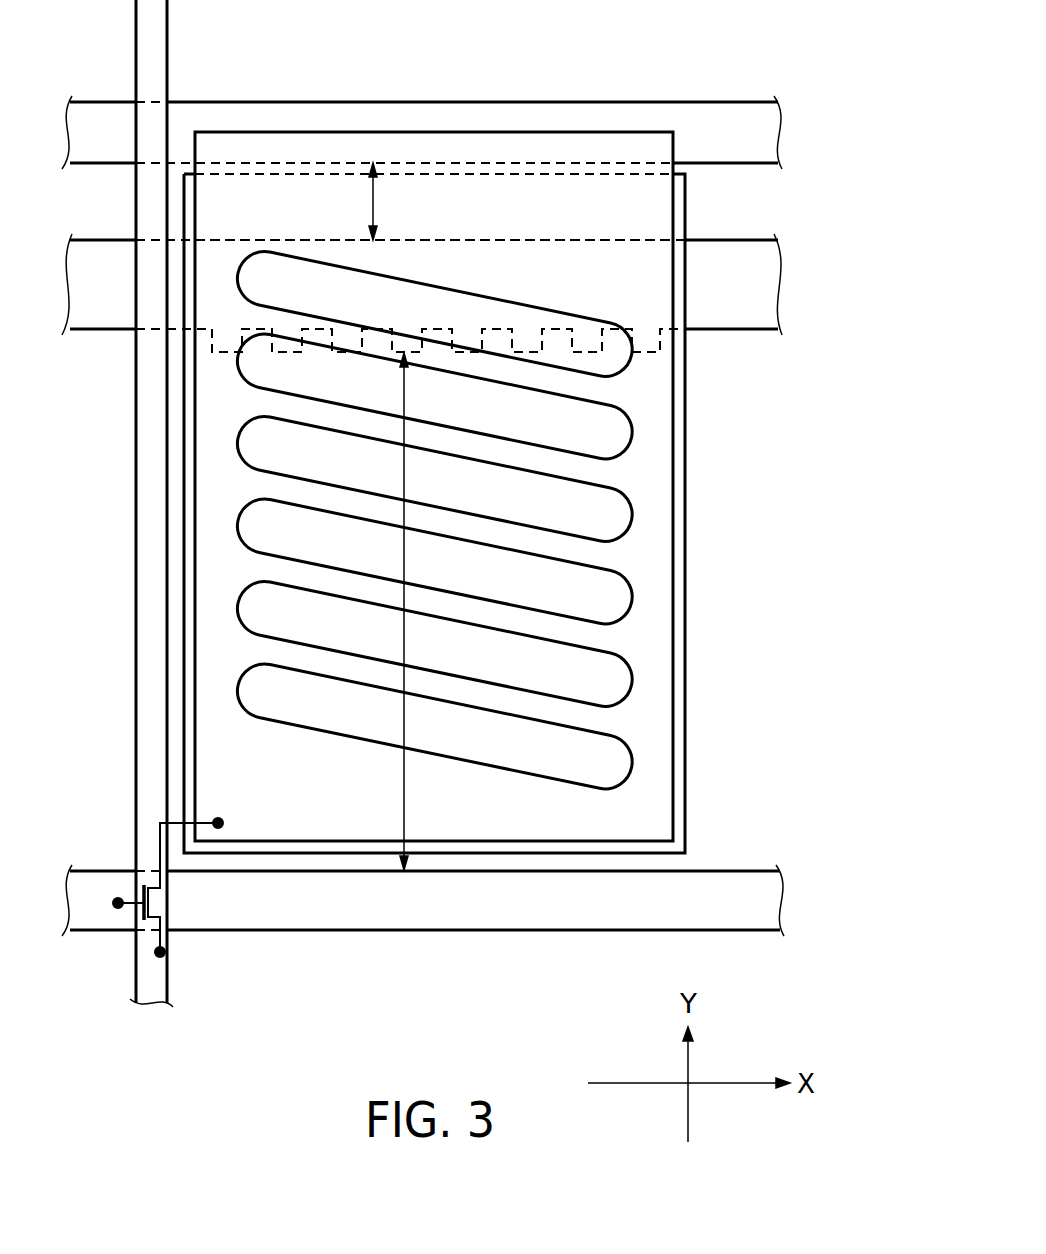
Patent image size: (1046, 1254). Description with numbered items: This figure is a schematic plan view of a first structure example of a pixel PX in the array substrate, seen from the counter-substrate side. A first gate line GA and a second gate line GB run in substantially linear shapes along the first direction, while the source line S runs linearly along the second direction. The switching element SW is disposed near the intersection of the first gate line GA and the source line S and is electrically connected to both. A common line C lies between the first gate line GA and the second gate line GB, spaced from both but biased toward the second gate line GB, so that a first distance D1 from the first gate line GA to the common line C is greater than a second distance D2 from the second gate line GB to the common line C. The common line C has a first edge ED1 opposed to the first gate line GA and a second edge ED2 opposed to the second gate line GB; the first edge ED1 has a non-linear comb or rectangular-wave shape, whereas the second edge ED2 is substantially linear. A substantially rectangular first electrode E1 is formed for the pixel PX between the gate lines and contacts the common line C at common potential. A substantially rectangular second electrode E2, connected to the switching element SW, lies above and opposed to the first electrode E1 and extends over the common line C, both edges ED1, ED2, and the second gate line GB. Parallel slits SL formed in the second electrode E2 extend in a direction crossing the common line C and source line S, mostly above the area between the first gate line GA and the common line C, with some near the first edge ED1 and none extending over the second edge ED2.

The second gate line GB is at (727, 102).
The first gate line GA is at (781, 912).
The common line C is at (780, 300).
The source line S is at (169, 972).
The switching element SW is at (172, 904).
The pixel PX is at (735, 219).
The first electrode E1 is at (686, 825).
The second electrode E2 is at (675, 776).
The slit SL is at (660, 419).
The first edge ED1 is at (272, 356).
The second edge ED2 is at (568, 236).
The first distance D1 is at (420, 611).
The second distance D2 is at (388, 201).